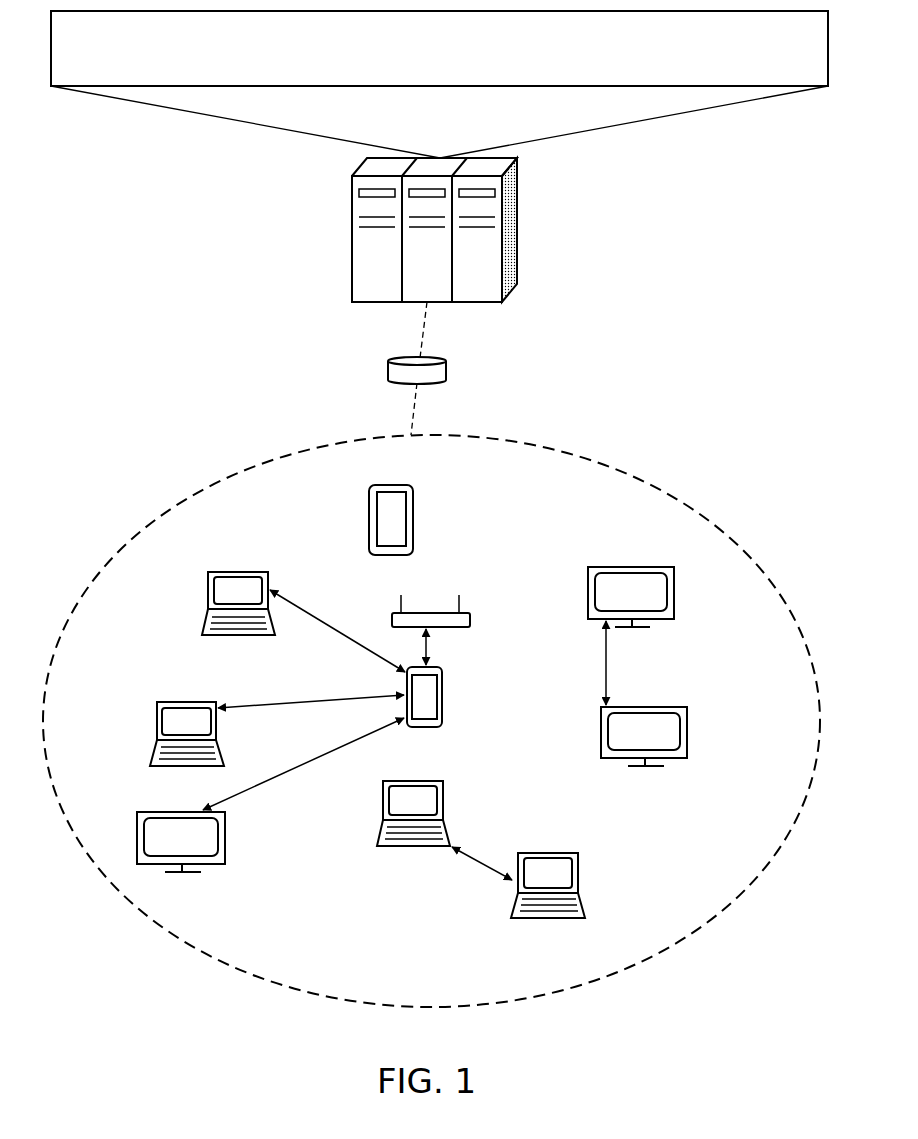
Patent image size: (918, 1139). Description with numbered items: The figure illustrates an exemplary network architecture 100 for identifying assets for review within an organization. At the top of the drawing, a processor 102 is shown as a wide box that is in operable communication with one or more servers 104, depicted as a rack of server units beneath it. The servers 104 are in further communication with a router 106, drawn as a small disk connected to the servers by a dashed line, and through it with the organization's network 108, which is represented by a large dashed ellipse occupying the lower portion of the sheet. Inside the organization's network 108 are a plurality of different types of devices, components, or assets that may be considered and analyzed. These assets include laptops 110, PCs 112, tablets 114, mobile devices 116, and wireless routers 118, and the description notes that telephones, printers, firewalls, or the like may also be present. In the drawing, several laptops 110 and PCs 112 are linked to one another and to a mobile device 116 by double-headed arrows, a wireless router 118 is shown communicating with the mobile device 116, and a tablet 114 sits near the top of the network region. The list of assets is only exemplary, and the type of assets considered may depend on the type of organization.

The network architecture 100 is at (176, 381).
The processor 102 is at (523, 59).
The servers 104 is at (525, 158).
The router 106 is at (446, 372).
The organization's network 108 is at (343, 958).
The laptops 110 is at (232, 572).
The PCs 112 is at (606, 567).
The tablets 114 is at (414, 506).
The mobile devices 116 is at (442, 699).
The wireless routers 118 is at (470, 610).